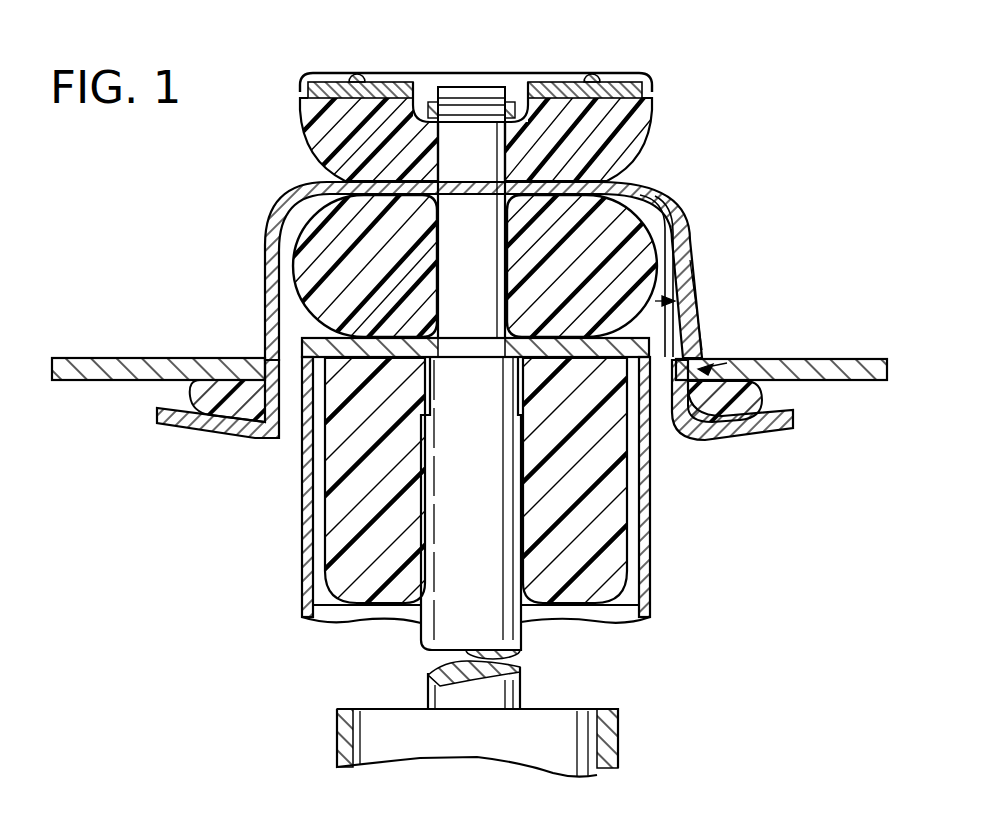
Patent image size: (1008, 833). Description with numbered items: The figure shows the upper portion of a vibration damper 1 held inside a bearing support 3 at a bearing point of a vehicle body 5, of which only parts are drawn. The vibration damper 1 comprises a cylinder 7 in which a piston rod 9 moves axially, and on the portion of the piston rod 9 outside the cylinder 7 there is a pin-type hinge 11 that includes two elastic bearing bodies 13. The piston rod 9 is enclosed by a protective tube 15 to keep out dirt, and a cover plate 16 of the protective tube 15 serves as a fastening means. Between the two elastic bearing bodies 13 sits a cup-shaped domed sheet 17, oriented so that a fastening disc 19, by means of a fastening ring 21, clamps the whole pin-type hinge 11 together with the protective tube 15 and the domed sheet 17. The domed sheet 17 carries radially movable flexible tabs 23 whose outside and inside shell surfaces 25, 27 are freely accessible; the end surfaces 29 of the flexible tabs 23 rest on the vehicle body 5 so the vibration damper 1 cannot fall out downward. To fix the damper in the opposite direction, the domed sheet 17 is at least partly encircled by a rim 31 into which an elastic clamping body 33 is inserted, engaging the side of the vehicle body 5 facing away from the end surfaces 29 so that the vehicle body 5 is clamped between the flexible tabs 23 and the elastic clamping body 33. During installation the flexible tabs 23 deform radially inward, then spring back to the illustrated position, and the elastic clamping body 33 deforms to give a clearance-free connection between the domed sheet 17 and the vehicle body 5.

The vibration damper 1 is at (256, 704).
The bearing support 3 is at (710, 199).
The vehicle body 5 is at (165, 368).
The cylinder 7 is at (614, 748).
The piston rod 9 is at (507, 628).
The pin-type hinge 11 is at (462, 247).
The elastic bearing bodies 13 is at (617, 123).
The protective tube 15 is at (305, 572).
The cover plate 16 is at (358, 357).
The domed sheet 17 is at (268, 258).
The fastening disc 19 is at (616, 92).
The fastening ring 21 is at (511, 93).
The flexible tabs 23 is at (688, 312).
The outside shell surface 25 is at (714, 334).
The inside shell surface 27 is at (688, 262).
The end surfaces 29 is at (760, 391).
The rim 31 is at (183, 422).
The elastic clamping body 33 is at (716, 410).